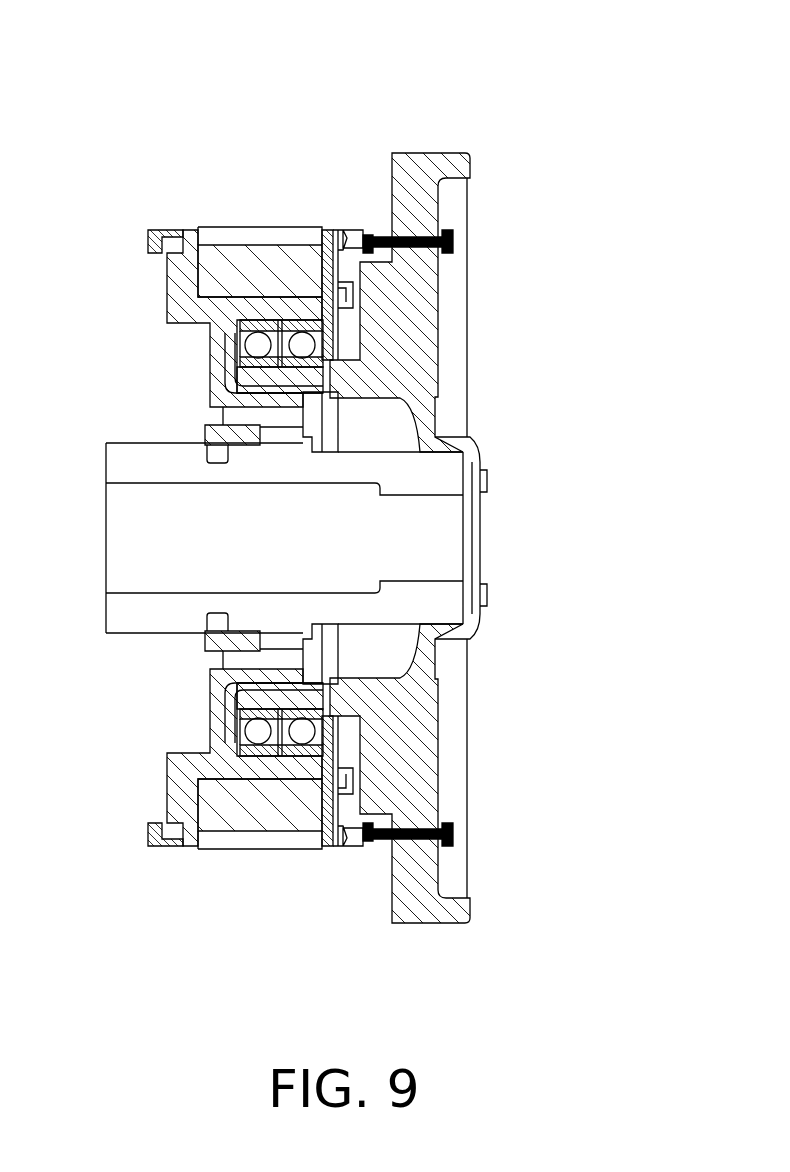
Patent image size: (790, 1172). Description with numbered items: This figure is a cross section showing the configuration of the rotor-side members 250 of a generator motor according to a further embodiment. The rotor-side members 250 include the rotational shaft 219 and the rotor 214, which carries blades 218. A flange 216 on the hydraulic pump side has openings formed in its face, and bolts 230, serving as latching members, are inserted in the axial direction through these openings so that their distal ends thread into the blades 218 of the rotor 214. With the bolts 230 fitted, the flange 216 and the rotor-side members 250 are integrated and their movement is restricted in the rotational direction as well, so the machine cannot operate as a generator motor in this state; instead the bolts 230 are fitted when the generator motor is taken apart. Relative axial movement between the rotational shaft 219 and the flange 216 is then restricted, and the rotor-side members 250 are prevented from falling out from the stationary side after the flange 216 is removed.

The rotor-side members 250 is at (131, 185).
The rotor 214 is at (243, 217).
The flange 216 is at (472, 138).
The blades 218 is at (348, 228).
The rotational shaft 219 is at (118, 432).
The bolts 230 is at (453, 240).